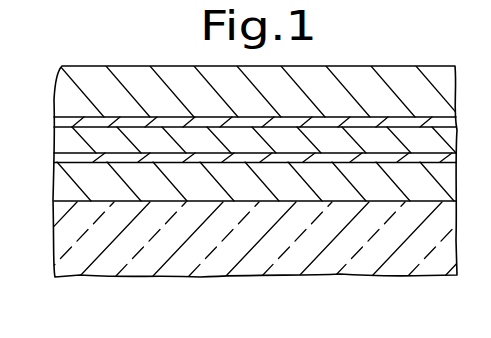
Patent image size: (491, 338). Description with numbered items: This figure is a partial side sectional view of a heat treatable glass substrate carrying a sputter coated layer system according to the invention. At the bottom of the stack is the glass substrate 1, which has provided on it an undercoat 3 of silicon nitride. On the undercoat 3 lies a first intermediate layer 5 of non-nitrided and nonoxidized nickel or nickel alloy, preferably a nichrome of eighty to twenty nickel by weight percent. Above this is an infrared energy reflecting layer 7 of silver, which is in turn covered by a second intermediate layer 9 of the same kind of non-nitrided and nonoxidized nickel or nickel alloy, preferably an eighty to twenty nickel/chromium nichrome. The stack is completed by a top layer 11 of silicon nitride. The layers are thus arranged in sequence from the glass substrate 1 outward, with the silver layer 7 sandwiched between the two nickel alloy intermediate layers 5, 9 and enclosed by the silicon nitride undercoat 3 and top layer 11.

The glass substrate 1 is at (70, 240).
The undercoat 3 is at (63, 190).
The first intermediate layer 5 is at (60, 158).
The infrared energy reflecting layer 7 is at (63, 140).
The second intermediate layer 9 is at (62, 122).
The top layer 11 is at (63, 88).